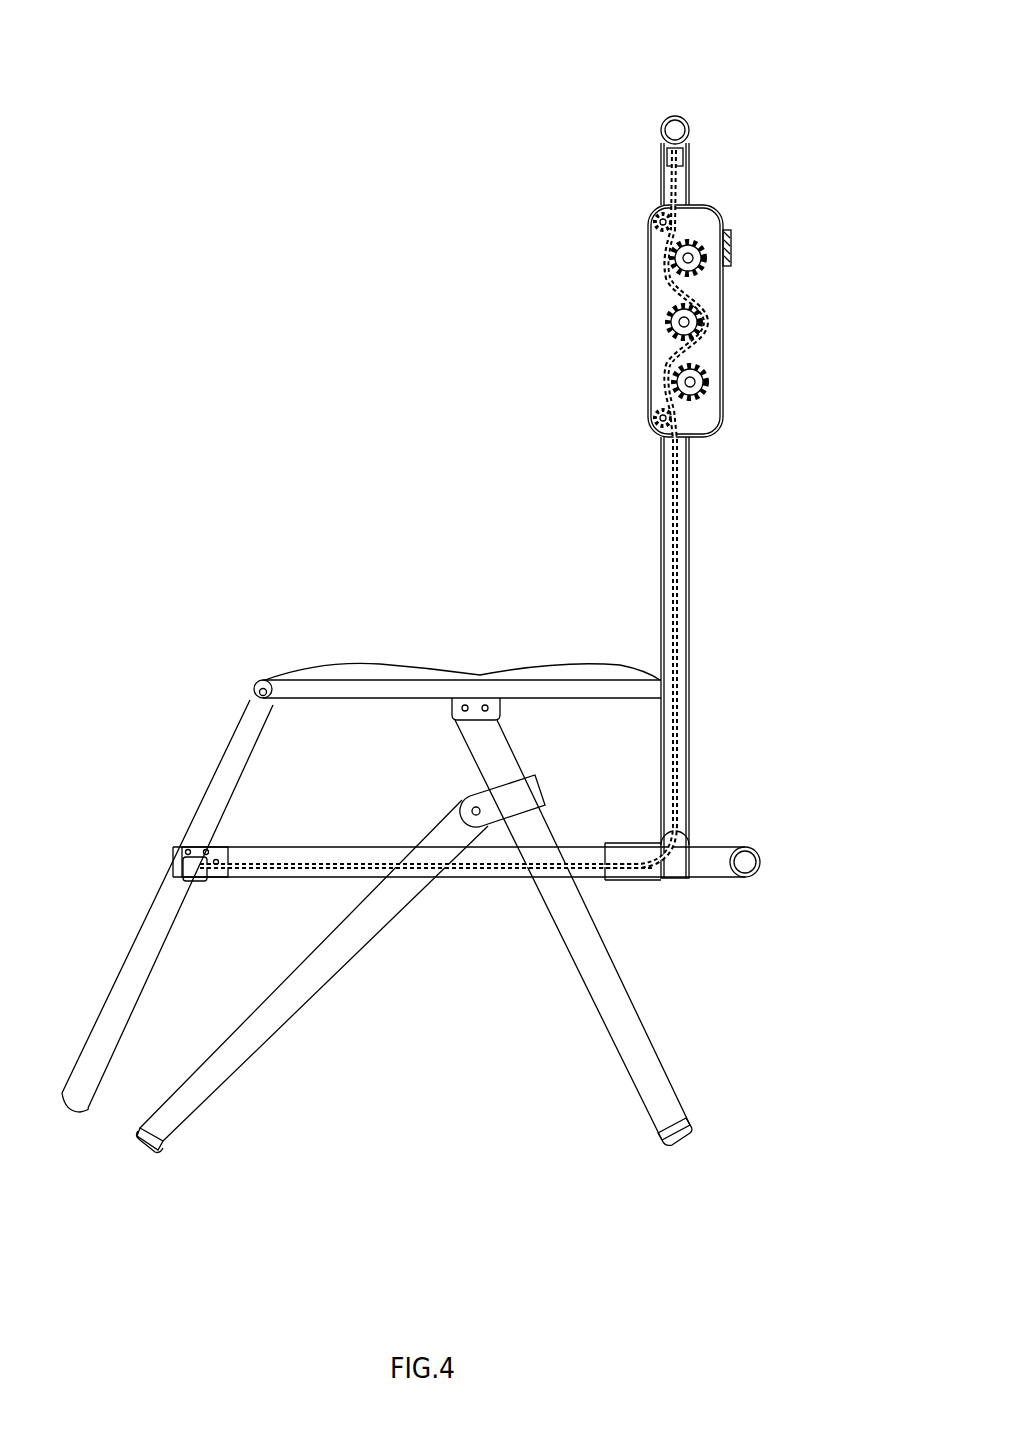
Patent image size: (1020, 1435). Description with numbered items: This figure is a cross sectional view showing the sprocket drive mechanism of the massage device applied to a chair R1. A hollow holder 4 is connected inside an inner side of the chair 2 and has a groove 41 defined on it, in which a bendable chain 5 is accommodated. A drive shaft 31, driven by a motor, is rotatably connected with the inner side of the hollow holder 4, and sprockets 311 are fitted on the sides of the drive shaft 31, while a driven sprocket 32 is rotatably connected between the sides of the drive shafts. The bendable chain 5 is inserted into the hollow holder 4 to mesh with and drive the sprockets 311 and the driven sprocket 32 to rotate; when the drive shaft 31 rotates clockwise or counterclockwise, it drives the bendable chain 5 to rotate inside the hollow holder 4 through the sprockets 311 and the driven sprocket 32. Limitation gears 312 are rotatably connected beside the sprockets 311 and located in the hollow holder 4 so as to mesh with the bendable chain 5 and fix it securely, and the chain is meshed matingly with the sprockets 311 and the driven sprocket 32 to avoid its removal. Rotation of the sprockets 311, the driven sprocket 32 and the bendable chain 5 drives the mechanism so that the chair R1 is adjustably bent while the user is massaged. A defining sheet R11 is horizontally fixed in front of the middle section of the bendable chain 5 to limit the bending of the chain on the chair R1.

The chair 2 is at (690, 115).
The hollow holder 4 is at (728, 208).
The groove 41 is at (655, 205).
The limitation gear 312 is at (650, 218).
The sprocket 311 is at (712, 243).
The drive shaft 31 is at (705, 262).
The bendable chain 5 is at (665, 290).
The driven sprocket 32 is at (660, 325).
The chair R1 is at (365, 568).
The defining sheet R11 is at (638, 838).